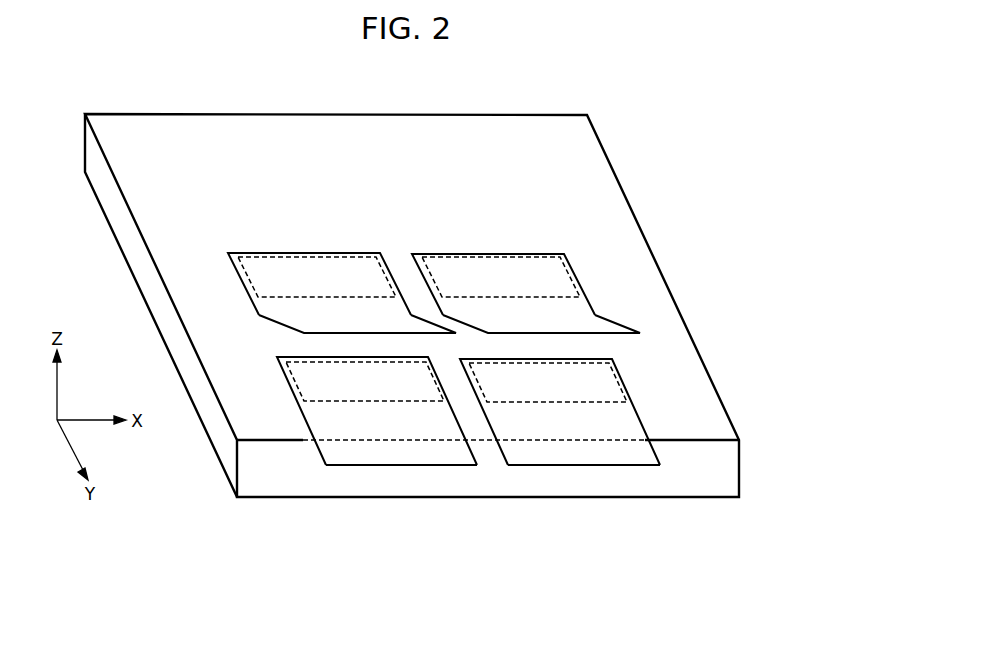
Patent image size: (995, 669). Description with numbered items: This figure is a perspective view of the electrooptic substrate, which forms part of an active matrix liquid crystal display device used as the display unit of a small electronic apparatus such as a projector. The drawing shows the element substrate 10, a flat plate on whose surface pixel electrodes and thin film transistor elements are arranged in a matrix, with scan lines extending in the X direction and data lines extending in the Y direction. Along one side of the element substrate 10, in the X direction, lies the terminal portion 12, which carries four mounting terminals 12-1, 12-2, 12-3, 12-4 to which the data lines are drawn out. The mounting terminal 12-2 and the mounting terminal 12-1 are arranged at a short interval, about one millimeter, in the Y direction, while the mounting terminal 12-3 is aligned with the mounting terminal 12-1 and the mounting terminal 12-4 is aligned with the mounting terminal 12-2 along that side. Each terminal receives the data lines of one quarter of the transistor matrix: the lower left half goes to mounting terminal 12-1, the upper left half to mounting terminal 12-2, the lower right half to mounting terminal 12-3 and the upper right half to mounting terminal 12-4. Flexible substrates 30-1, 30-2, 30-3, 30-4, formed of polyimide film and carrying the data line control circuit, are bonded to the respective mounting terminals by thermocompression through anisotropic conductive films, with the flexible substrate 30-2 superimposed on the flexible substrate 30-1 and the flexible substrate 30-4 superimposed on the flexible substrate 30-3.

The element substrate 10 is at (174, 362).
The terminal portion 12 is at (673, 240).
The mounting terminal 12-1 is at (303, 385).
The mounting terminal 12-2 is at (240, 274).
The mounting terminal 12-3 is at (604, 384).
The mounting terminal 12-4 is at (557, 277).
The flexible substrate 30-1 is at (307, 418).
The flexible substrate 30-2 is at (270, 321).
The flexible substrate 30-3 is at (642, 421).
The flexible substrate 30-4 is at (600, 315).